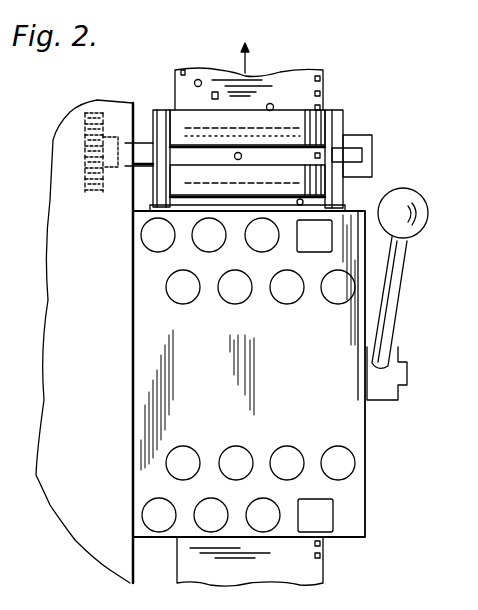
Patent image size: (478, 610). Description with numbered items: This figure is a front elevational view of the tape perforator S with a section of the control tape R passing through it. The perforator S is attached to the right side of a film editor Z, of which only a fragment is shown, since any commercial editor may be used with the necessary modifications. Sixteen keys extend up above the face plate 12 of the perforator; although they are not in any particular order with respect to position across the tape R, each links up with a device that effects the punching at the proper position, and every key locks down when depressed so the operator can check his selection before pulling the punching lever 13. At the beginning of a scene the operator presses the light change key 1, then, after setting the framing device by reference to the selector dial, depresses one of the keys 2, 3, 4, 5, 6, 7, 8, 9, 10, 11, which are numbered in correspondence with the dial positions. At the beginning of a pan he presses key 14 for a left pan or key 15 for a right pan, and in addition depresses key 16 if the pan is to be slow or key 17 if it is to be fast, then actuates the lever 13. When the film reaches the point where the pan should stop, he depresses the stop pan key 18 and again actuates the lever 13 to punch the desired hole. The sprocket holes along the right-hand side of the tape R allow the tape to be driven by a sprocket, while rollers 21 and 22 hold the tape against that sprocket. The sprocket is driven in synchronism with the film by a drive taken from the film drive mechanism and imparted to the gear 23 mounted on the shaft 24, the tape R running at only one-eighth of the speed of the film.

The light change key 1 is at (318, 240).
The key 2 is at (160, 243).
The key 3 is at (210, 243).
The key 4 is at (262, 243).
The key 5 is at (180, 298).
The key 6 is at (238, 298).
The key 7 is at (192, 430).
The key 8 is at (243, 432).
The key 9 is at (163, 488).
The key 10 is at (218, 489).
The key 11 is at (268, 489).
The face plate 12 is at (357, 430).
The punching lever 13 is at (395, 313).
The left pan key 14 is at (295, 294).
The right pan key 15 is at (346, 298).
The slow pan key 16 is at (296, 434).
The fast pan key 17 is at (344, 434).
The stop pan key 18 is at (324, 488).
The roller 21 is at (295, 128).
The roller 22 is at (300, 188).
The gear 23 is at (97, 116).
The shaft 24 is at (146, 150).
The control tape R is at (324, 90).
The tape perforator S is at (369, 481).
The film editor Z is at (90, 545).